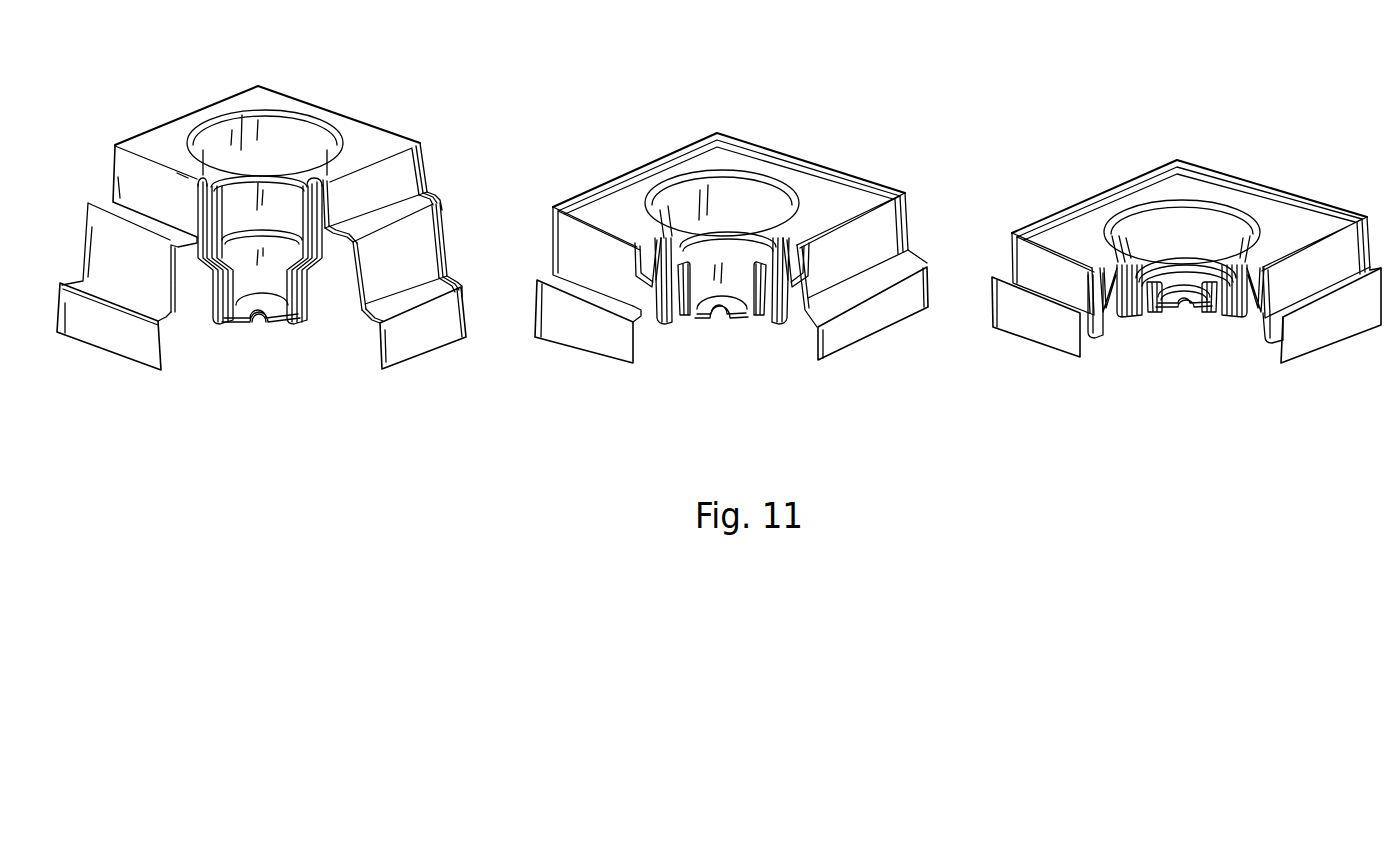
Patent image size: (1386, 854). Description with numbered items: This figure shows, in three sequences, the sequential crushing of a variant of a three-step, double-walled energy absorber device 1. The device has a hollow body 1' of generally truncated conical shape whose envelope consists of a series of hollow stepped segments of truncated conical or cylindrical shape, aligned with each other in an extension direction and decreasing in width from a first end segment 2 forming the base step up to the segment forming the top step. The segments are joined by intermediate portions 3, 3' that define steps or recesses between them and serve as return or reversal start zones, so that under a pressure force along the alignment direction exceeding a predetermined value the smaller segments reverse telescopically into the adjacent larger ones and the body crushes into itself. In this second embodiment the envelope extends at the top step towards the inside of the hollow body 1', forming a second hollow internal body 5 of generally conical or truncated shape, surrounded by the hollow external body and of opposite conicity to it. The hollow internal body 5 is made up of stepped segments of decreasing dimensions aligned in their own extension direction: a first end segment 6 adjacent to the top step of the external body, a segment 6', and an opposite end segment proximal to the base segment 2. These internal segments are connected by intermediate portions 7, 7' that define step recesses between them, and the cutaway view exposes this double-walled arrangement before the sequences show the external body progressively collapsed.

The energy absorber device 1 is at (491, 257).
The hollow body 1' is at (719, 255).
The first end segment 2 is at (445, 233).
The intermediate portion 3 is at (438, 242).
The intermediate portion 3' is at (409, 162).
The hollow internal body 5 is at (262, 330).
The first end segment 6 is at (267, 110).
The hollow stepped segment 6' is at (130, 167).
The intermediate portion 7 is at (257, 152).
The intermediate portion 7' is at (249, 270).